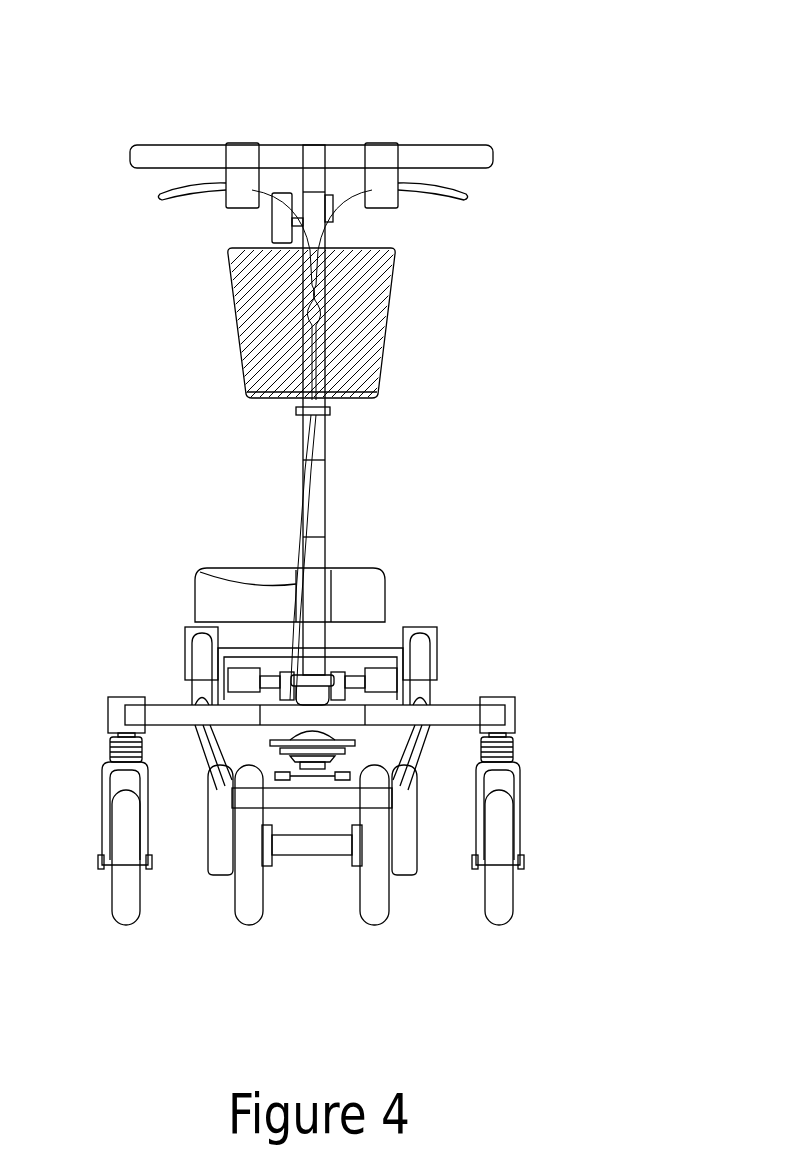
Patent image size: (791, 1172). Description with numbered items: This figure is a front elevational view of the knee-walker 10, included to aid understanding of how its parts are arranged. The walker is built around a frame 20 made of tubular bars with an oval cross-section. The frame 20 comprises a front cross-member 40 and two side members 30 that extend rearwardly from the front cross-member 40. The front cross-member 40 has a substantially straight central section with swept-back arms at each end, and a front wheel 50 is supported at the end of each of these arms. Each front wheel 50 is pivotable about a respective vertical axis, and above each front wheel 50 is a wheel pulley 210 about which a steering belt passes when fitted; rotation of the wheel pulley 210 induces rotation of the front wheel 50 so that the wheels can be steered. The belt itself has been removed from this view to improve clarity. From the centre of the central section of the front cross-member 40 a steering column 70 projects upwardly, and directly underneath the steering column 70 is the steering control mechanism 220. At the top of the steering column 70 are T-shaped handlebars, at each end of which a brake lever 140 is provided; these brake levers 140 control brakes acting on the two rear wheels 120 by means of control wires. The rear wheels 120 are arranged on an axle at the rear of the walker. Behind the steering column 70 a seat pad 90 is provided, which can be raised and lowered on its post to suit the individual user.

The knee-walker 10 is at (104, 68).
The frame 20 is at (474, 643).
The side members 30 is at (200, 680).
The front cross-member 40 is at (478, 718).
The front wheels 50 is at (122, 897).
The steering column 70 is at (318, 512).
The seat pad 90 is at (465, 150).
The rear wheels 120 is at (245, 905).
The brake levers 140 is at (142, 193).
The wheel pulley 210 is at (118, 758).
The steering control mechanism 220 is at (315, 788).